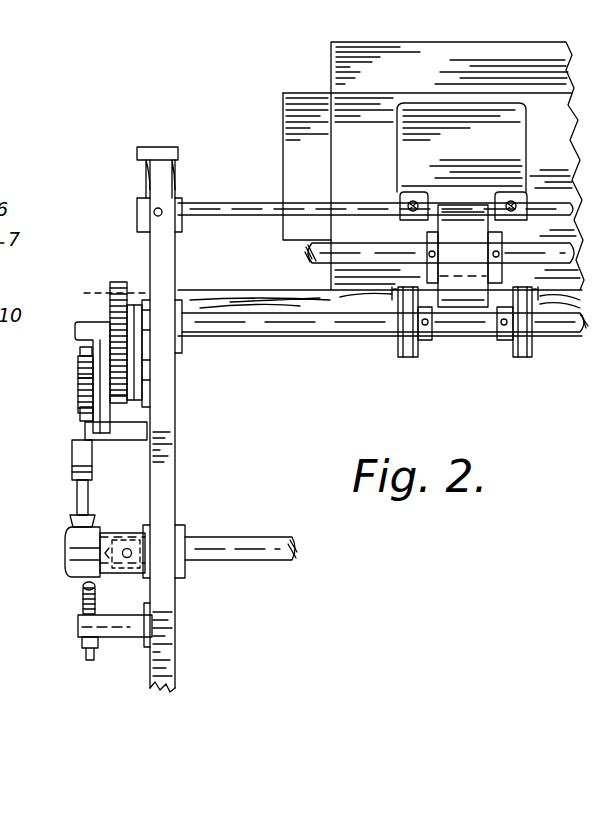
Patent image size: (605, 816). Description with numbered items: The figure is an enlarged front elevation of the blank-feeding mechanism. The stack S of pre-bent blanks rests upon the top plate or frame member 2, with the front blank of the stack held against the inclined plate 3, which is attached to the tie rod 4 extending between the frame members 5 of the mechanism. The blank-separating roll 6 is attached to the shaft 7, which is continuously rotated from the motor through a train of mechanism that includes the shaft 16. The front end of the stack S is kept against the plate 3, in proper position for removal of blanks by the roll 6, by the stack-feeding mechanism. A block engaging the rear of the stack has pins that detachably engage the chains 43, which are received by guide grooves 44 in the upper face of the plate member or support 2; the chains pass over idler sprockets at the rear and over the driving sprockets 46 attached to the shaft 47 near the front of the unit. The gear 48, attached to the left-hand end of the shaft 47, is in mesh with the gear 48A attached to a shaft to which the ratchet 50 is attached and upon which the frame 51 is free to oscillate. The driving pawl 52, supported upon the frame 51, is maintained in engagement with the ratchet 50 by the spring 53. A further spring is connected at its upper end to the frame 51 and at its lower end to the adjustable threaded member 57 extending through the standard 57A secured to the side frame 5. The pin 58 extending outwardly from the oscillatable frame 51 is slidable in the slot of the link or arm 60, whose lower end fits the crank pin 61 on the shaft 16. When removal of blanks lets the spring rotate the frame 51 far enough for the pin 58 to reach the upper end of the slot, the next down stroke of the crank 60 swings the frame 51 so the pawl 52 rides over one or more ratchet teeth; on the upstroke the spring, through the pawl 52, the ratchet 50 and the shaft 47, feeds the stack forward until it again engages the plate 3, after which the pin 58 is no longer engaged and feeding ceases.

The stack S is at (425, 62).
The top plate or frame member 2 is at (215, 296).
The inclined plate 3 is at (395, 150).
The tie rod 4 is at (205, 212).
The frame member 5 is at (170, 408).
The blank-separating roll 6 is at (470, 254).
The shaft 7 is at (306, 253).
The shaft 16 is at (215, 548).
The chains 43 is at (412, 352).
The guide grooves 44 is at (392, 292).
The driving sprockets 46 is at (426, 342).
The shaft 47 is at (268, 328).
The gear 48 is at (118, 282).
The gear 48A is at (118, 392).
The ratchet 50 is at (78, 386).
The frame 51 is at (100, 335).
The driving pawl 52 is at (78, 366).
The spring 53 is at (80, 350).
The adjustable threaded member 57 is at (82, 598).
The standard 57A is at (122, 636).
The pin 58 is at (80, 418).
The link or arm 60 is at (92, 468).
The crank pin 61 is at (65, 566).